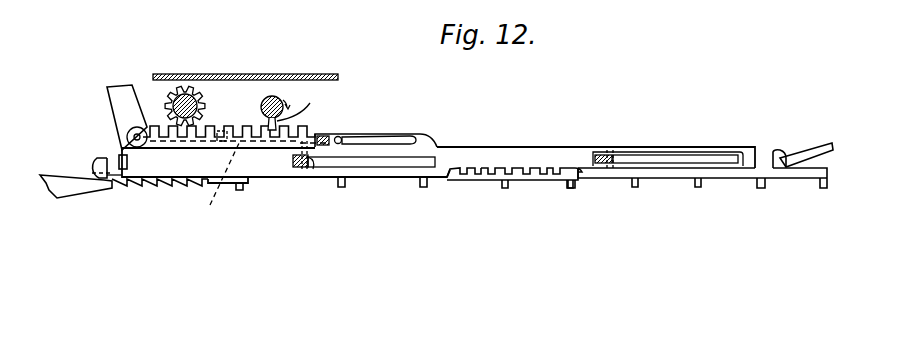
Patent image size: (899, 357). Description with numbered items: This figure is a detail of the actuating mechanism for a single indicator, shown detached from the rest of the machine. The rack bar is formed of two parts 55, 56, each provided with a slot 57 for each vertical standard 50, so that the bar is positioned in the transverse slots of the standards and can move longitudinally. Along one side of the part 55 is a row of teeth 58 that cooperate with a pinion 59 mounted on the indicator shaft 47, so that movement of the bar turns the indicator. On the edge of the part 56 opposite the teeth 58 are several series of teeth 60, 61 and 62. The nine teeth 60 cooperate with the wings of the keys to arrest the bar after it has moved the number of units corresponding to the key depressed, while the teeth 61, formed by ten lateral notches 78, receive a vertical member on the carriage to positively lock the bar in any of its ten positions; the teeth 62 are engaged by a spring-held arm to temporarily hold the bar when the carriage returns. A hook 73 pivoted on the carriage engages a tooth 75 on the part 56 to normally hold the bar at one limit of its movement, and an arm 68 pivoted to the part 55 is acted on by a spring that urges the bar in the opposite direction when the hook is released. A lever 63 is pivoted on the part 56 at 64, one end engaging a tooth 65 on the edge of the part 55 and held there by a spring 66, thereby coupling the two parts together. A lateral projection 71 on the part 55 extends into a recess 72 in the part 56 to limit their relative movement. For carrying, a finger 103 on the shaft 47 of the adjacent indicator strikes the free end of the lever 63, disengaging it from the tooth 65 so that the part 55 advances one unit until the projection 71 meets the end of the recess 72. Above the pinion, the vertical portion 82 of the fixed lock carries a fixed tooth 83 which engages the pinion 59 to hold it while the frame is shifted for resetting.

The indicator shaft 47 is at (188, 92).
The fixed tooth 83 is at (186, 92).
The pinion 59 is at (206, 112).
The vertical portion 82 is at (282, 76).
The arm 68 is at (118, 97).
The lateral projection 71 is at (120, 155).
The recess 72 is at (104, 159).
The teeth 58 is at (259, 104).
The finger 103 is at (310, 103).
The lever 63 is at (327, 136).
The pivot 64 is at (343, 137).
The tooth 65 is at (424, 136).
The slot 57 is at (436, 157).
The bar part 55 is at (563, 146).
The vertical standard 50 is at (303, 172).
The tooth 75 is at (781, 151).
The hook 73 is at (822, 144).
The teeth 62 is at (169, 185).
The spring 66 is at (218, 182).
The teeth 60 is at (240, 190).
The lateral notches 78 is at (475, 176).
The teeth 61 is at (491, 174).
The bar part 56 is at (610, 178).